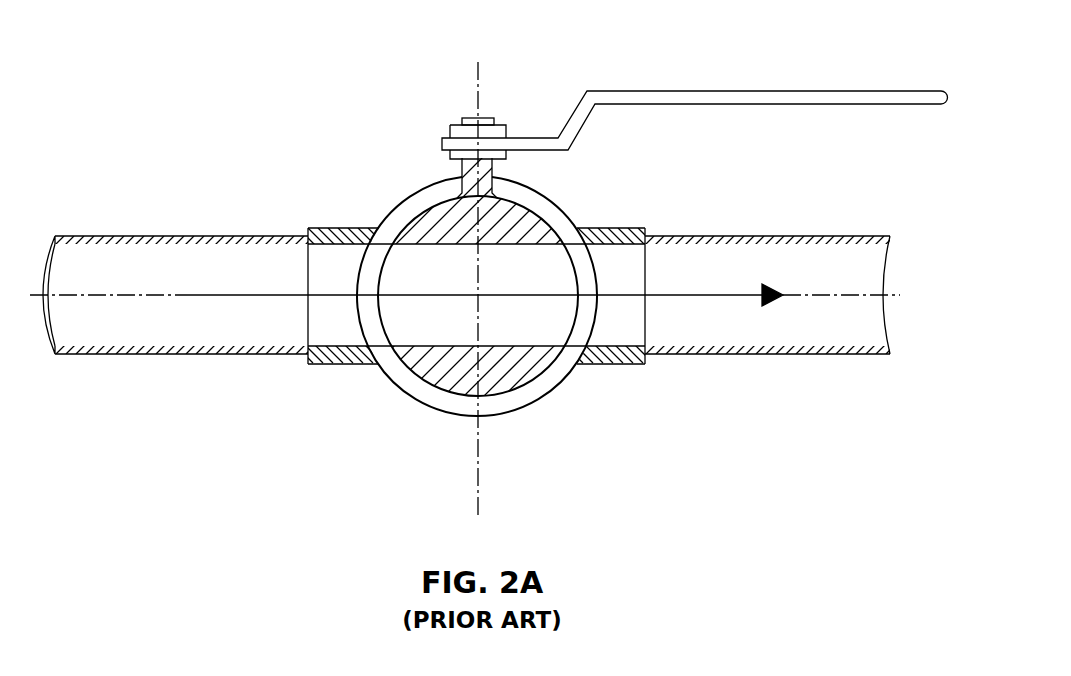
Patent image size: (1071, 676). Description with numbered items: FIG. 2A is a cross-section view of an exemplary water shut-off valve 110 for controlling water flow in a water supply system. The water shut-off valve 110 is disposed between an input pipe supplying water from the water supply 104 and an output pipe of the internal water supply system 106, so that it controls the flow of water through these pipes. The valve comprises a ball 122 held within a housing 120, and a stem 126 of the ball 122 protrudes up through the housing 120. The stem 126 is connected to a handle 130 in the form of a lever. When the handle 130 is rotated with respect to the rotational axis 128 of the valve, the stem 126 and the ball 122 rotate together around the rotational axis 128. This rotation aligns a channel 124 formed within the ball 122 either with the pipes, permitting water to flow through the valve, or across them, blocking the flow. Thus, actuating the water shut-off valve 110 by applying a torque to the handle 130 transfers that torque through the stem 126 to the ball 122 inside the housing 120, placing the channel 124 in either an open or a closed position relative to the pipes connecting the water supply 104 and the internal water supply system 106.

The water supply 104 is at (133, 357).
The internal water supply system 106 is at (770, 357).
The water shut-off valve 110 is at (431, 458).
The housing 120 is at (624, 228).
The ball 122 is at (540, 214).
The channel 124 is at (531, 343).
The stem 126 is at (487, 117).
The rotational axis 128 is at (478, 482).
The handle 130 is at (717, 91).